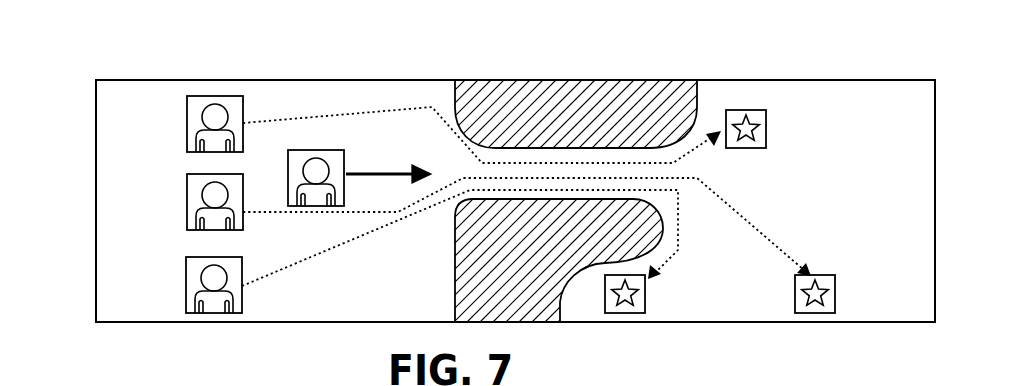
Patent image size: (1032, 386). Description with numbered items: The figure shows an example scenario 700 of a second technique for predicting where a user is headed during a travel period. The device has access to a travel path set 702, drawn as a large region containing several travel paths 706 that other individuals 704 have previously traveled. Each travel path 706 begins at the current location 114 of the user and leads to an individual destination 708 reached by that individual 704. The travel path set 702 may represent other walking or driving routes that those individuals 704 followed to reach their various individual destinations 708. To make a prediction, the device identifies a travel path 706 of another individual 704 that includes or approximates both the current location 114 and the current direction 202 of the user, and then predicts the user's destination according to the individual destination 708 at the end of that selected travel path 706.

The example scenario 700 is at (104, 40).
The travel path set 702 is at (96, 106).
The individual 704 is at (187, 122).
The current location 114 is at (319, 150).
The current direction 202 is at (370, 172).
The travel path 706 is at (335, 114).
The individual destination 708 is at (767, 128).